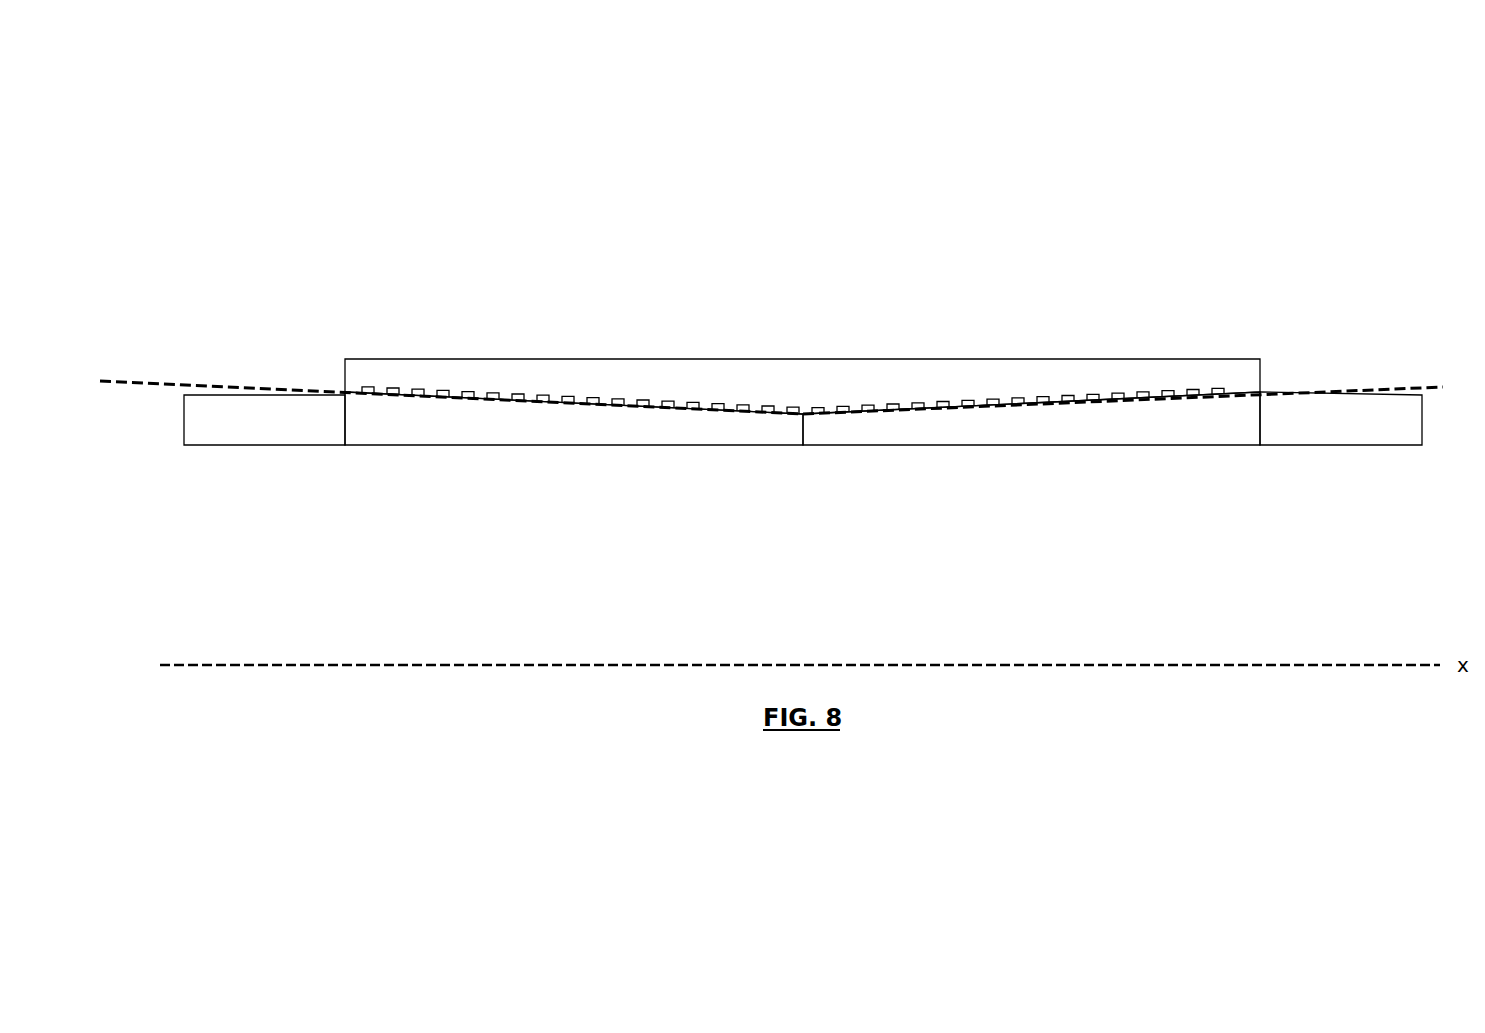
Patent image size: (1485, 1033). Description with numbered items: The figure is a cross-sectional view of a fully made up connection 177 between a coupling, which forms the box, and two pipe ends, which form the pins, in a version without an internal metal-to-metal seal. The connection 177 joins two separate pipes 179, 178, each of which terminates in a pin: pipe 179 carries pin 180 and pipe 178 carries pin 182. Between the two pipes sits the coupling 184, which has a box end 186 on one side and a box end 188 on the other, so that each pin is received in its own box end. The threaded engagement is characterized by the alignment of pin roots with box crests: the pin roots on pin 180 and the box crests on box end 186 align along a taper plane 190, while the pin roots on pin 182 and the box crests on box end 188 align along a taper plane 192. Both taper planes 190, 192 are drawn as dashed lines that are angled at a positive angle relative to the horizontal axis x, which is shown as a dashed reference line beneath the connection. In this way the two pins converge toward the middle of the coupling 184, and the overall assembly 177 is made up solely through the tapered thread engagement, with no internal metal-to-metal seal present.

The connection 177 is at (1012, 173).
The pipe 178 is at (1382, 430).
The pipe 179 is at (233, 430).
The pin 180 is at (587, 430).
The pin 182 is at (1013, 430).
The coupling 184 is at (867, 368).
The box end 186 is at (480, 370).
The box end 188 is at (1087, 368).
The taper plane 190 is at (451, 382).
The taper plane 192 is at (1123, 388).